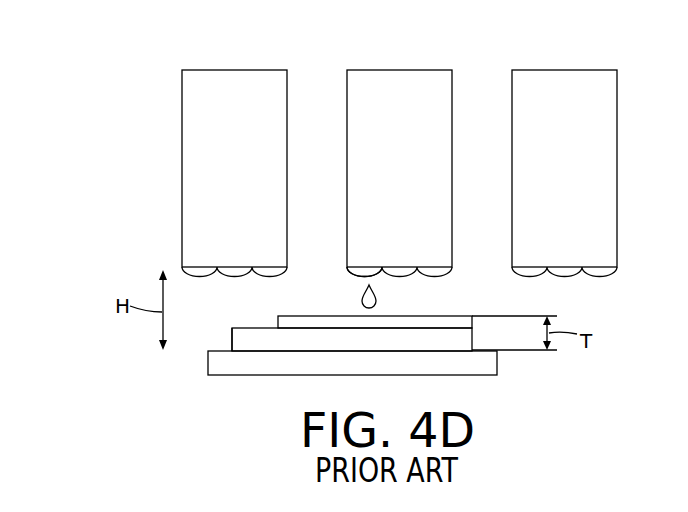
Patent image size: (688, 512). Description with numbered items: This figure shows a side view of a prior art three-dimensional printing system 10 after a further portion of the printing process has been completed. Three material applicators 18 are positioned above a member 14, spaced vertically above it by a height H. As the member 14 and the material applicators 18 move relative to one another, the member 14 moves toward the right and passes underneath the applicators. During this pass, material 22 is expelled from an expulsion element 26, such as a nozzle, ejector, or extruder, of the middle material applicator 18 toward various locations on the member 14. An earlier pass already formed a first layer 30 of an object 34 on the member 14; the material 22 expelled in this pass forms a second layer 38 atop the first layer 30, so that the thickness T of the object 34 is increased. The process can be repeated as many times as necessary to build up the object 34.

The three-dimensional printing system 10 is at (112, 89).
The material applicator 18 is at (233, 70).
The expulsion element 26 is at (360, 278).
The material 22 is at (377, 292).
The second layer 38 is at (440, 316).
The first layer 30 is at (472, 339).
The member 14 is at (425, 372).
The object 34 is at (224, 334).